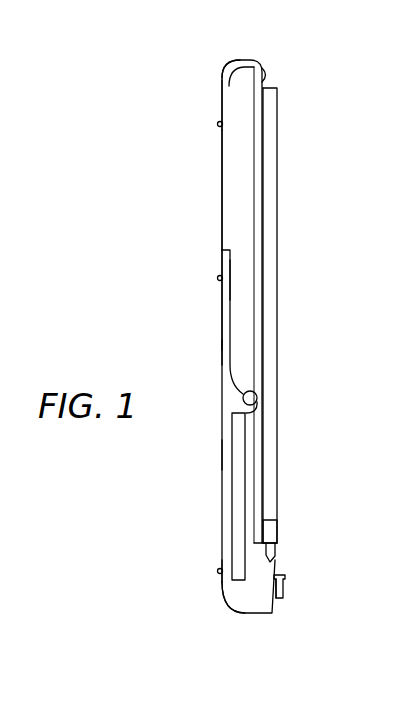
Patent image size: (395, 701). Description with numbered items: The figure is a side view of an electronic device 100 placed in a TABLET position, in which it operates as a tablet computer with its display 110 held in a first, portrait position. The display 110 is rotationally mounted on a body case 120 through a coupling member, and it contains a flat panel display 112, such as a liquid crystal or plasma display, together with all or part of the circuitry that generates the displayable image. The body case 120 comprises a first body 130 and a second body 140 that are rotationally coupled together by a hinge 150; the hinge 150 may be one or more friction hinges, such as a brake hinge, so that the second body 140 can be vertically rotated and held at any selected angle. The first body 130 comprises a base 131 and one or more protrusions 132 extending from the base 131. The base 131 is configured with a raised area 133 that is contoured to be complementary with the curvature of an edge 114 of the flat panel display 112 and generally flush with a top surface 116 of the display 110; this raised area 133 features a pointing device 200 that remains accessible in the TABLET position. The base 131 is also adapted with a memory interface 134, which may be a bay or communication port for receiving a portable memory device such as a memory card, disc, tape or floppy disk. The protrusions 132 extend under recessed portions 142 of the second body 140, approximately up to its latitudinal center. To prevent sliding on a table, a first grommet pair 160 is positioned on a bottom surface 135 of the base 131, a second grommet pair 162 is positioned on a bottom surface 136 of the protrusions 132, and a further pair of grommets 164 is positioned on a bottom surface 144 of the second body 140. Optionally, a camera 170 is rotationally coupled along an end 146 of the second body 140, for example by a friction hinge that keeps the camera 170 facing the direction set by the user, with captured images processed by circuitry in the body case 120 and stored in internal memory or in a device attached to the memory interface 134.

The electronic device 100 is at (90, 226).
The display 110 is at (282, 63).
The flat panel display 112 is at (288, 250).
The edge 114 is at (286, 576).
The top surface 116 is at (280, 515).
The body case 120 is at (218, 604).
The first body 130 is at (260, 594).
The base 131 is at (243, 600).
The protrusion 132 is at (225, 343).
The raised area 133 is at (276, 553).
The memory interface 134 is at (237, 511).
The bottom surface 135 is at (224, 459).
The bottom surface 136 is at (222, 304).
The second body 140 is at (227, 97).
The recessed portion 142 is at (232, 278).
The bottom surface 144 is at (222, 188).
The end 146 is at (226, 77).
The hinge 150 is at (258, 396).
The first grommet pair 160 is at (217, 570).
The second grommet pair 162 is at (217, 279).
The pair of grommets 164 is at (217, 124).
The camera 170 is at (270, 73).
The pointing device 200 is at (290, 591).